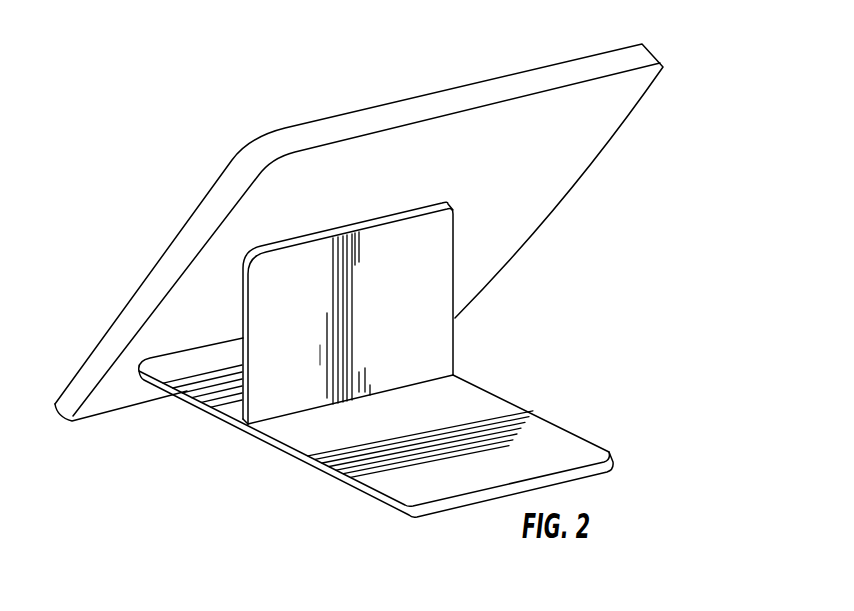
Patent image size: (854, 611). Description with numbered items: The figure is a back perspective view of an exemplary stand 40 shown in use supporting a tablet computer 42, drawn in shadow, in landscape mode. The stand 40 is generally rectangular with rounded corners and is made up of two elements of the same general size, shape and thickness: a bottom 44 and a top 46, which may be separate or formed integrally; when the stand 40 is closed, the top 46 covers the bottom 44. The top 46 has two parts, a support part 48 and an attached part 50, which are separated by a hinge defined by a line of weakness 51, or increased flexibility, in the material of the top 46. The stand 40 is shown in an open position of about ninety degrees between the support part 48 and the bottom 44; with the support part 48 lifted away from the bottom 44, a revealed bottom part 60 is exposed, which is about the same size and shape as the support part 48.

The stand 40 is at (622, 417).
The tablet computer 42 is at (643, 45).
The bottom 44 is at (412, 516).
The top 46 is at (500, 413).
The support part 48 is at (428, 263).
The attached part 50 is at (287, 428).
The line of weakness 51 is at (350, 405).
The revealed bottom part 60 is at (227, 405).